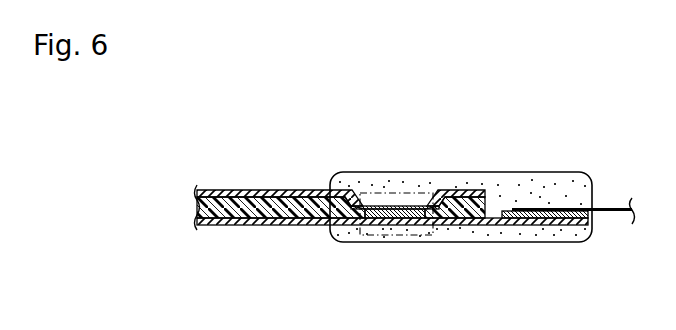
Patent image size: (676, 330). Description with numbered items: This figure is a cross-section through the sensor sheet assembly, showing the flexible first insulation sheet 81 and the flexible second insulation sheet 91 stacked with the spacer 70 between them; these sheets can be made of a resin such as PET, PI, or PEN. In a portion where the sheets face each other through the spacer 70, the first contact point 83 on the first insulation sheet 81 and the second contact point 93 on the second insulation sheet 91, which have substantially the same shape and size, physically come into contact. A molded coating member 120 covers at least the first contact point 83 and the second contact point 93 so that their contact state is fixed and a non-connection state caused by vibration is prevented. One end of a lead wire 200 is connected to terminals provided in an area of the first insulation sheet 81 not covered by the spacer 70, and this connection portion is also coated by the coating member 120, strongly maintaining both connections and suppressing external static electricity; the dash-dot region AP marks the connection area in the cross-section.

The spacer 70 is at (197, 208).
The first insulation sheet 81 is at (288, 222).
The first contact point 83 is at (388, 212).
The second insulation sheet 91 is at (238, 191).
The second contact point 93 is at (400, 207).
The coating member 120 is at (546, 172).
The lead wire 200 is at (614, 208).
The attachment portion AP is at (376, 193).